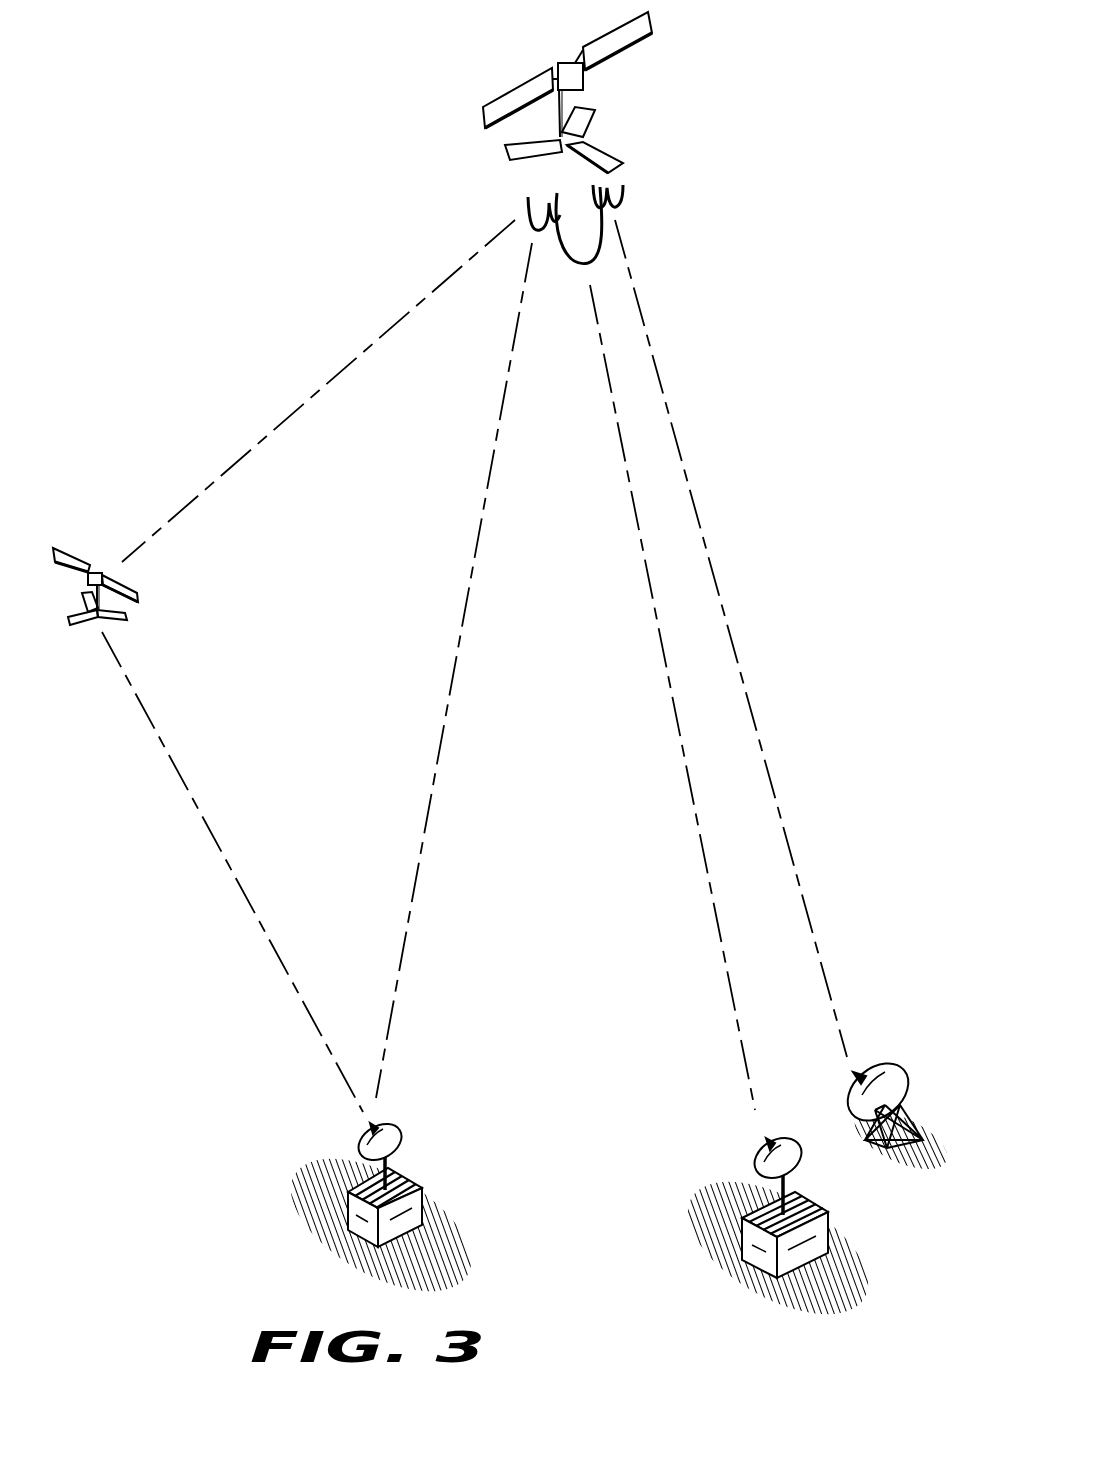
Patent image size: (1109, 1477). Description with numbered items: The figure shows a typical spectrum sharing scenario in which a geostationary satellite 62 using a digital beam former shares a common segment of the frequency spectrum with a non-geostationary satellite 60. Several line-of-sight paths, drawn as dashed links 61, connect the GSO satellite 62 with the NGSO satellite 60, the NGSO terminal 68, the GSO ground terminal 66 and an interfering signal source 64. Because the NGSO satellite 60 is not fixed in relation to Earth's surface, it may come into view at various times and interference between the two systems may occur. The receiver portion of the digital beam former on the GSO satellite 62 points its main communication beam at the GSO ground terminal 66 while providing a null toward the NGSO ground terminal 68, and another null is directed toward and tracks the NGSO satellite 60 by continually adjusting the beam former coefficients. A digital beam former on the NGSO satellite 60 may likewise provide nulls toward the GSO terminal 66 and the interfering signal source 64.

The non-geostationary satellite 60 is at (83, 572).
The communication links 61 is at (155, 725).
The geostationary satellite 62 is at (520, 83).
The interfering signal source 64 is at (897, 1063).
The GSO ground terminal 66 is at (742, 1226).
The NGSO terminal 68 is at (348, 1197).